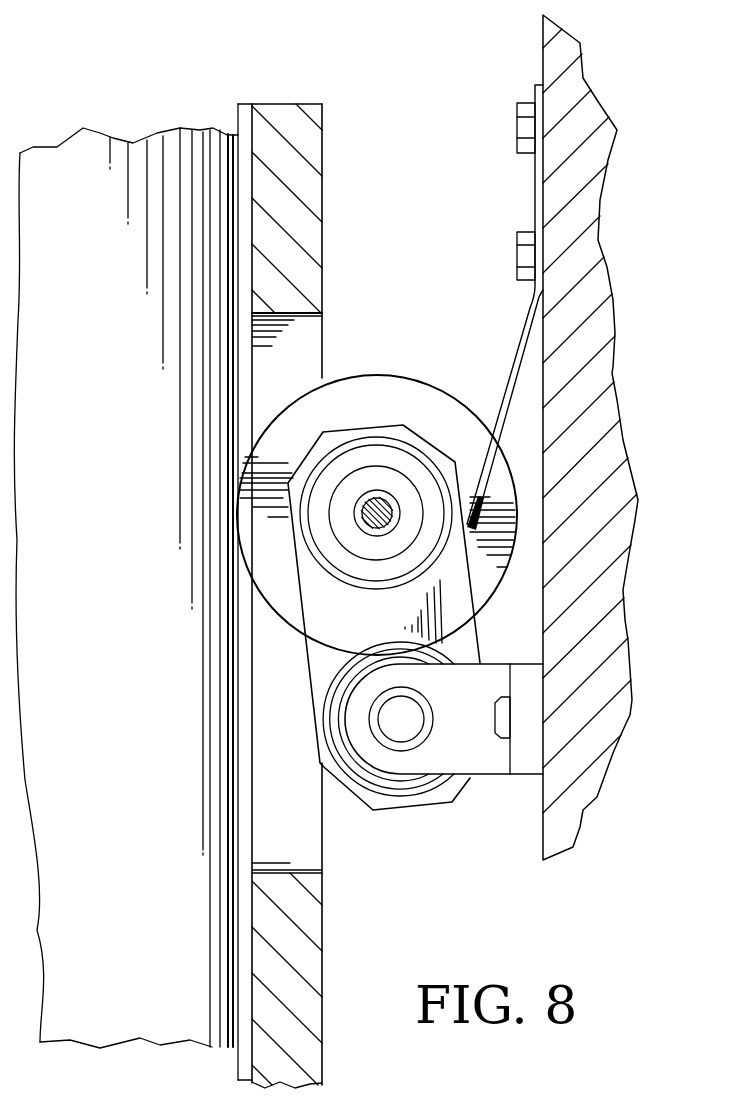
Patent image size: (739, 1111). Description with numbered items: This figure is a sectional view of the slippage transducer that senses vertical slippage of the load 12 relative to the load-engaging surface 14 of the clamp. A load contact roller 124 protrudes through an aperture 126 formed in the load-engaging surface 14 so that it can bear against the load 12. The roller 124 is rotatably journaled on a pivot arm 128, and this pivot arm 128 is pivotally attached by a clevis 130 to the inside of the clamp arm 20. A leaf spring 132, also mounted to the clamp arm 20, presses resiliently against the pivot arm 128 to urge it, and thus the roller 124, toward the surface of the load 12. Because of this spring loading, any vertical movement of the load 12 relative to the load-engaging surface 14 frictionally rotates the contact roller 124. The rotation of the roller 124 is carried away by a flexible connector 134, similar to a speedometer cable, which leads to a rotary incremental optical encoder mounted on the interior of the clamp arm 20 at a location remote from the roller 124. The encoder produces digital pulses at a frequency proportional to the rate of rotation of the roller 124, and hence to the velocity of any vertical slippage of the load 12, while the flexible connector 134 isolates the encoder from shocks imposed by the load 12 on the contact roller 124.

The load 12 is at (180, 128).
The load-engaging surface 14 is at (284, 105).
The clamp arm 20 is at (618, 486).
The load contact roller 124 is at (450, 394).
The aperture 126 is at (298, 318).
The pivot arm 128 is at (325, 660).
The clevis 130 is at (478, 752).
The leaf spring 132 is at (514, 342).
The flexible connector 134 is at (365, 530).